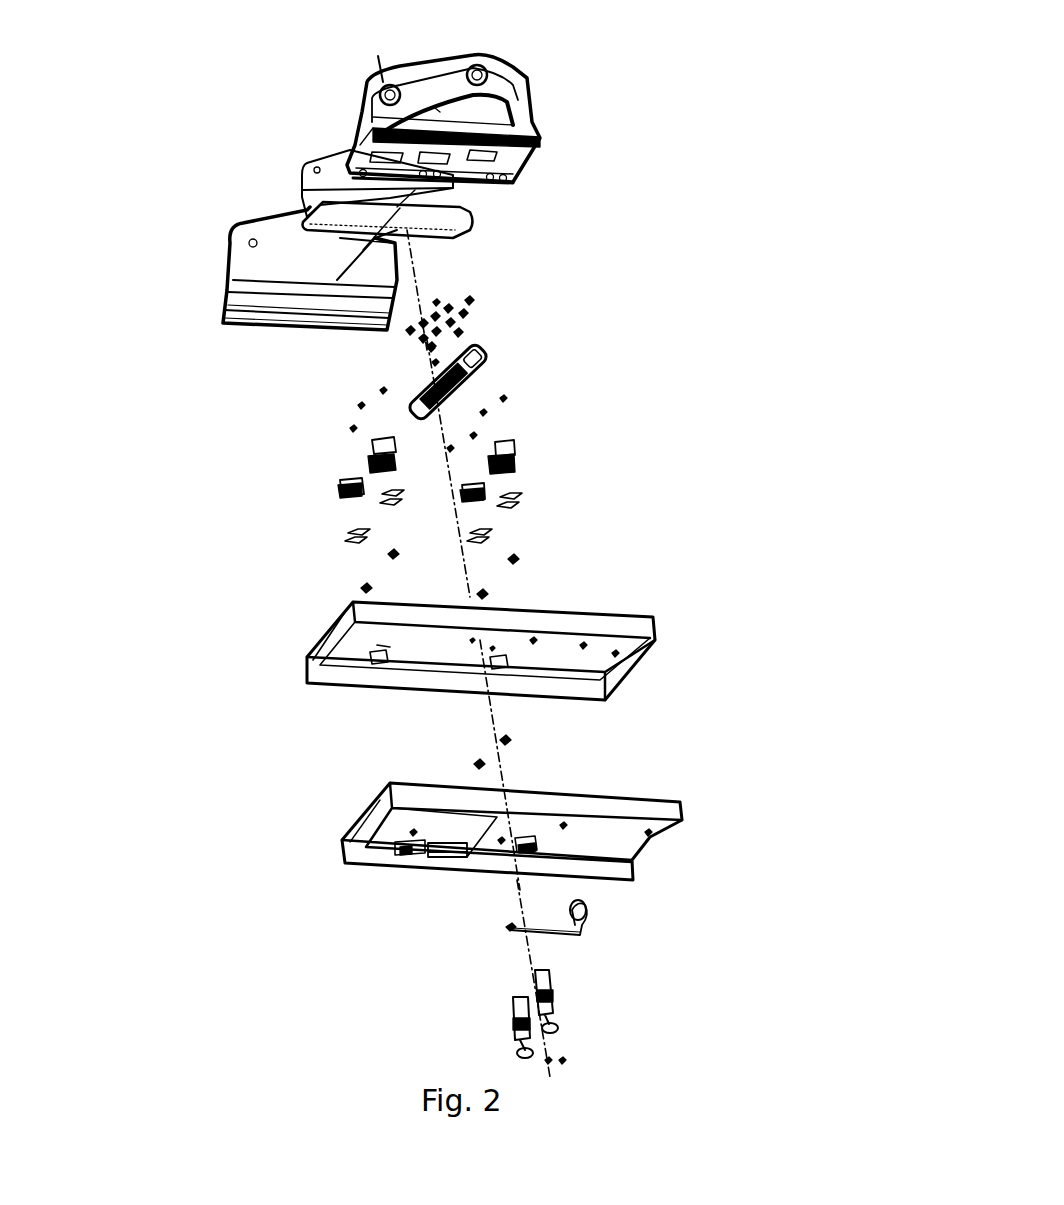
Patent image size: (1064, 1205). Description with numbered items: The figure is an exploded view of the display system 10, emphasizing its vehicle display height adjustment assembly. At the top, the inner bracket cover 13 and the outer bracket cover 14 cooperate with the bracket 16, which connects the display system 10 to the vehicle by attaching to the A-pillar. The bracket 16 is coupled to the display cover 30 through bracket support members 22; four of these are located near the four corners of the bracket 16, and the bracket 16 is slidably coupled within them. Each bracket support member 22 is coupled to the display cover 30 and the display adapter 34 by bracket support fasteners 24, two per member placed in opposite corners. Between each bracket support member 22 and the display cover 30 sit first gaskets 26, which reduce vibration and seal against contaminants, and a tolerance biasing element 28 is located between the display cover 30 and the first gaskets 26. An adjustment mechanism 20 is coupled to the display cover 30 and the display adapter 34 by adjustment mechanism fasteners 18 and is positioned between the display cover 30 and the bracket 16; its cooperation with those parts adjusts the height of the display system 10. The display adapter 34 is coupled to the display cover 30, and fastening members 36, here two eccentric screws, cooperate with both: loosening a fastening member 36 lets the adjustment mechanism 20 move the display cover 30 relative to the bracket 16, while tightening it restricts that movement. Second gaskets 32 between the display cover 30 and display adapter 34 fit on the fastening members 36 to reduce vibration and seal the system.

The display system 10 is at (203, 1010).
The inner bracket cover 13 is at (540, 68).
The outer bracket cover 14 is at (268, 215).
The bracket 16 is at (470, 214).
The adjustment mechanism fastener 18 is at (472, 296).
The adjustment mechanism 20 is at (484, 356).
The bracket support member 22 is at (515, 453).
The bracket support fastener 24 is at (330, 442).
The first gasket 26 is at (345, 536).
The tolerance biasing element 28 is at (362, 588).
The display cover 30 is at (315, 662).
The second gasket 32 is at (510, 738).
The display adapter 34 is at (345, 858).
The fastening member 36 is at (555, 1010).